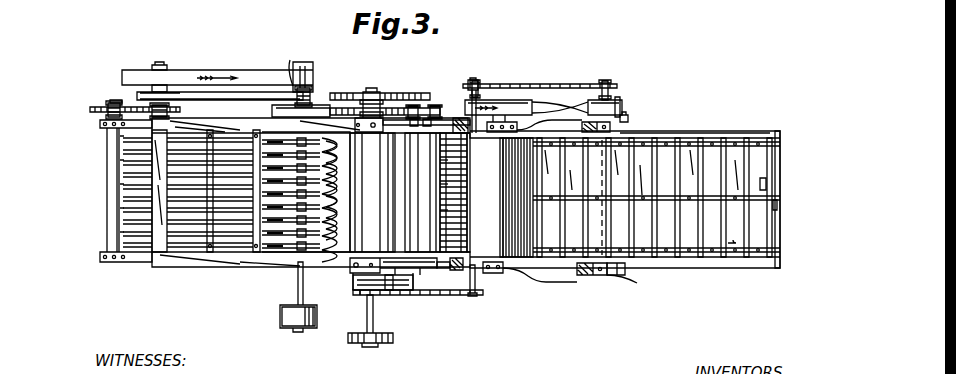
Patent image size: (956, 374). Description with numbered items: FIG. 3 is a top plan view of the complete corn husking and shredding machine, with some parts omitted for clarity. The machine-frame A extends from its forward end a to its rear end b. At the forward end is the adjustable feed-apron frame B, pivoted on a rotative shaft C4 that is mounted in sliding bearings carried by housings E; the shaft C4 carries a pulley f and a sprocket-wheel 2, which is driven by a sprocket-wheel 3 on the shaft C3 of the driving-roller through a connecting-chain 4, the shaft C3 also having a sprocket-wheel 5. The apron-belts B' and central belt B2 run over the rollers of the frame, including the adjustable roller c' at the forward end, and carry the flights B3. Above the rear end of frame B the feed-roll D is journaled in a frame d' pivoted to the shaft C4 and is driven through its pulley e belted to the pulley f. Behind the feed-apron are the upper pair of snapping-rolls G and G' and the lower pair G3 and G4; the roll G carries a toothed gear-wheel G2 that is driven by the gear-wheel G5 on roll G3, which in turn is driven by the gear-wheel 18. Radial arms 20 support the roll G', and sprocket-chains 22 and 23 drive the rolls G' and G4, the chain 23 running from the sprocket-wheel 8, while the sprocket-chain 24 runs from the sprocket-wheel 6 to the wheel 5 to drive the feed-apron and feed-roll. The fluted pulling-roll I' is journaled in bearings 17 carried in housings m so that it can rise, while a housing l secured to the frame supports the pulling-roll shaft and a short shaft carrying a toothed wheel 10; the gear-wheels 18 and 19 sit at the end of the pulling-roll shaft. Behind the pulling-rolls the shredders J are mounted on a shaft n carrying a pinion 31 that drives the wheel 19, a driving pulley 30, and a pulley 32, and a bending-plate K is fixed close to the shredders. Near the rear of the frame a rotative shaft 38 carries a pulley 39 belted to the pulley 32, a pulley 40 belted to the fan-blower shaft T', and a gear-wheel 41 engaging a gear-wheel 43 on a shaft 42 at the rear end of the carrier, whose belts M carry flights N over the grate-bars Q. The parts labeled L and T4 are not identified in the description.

The machine-frame A is at (246, 265).
The carrier belts M is at (107, 132).
The grate-bars Q is at (122, 180).
The rear end of the frame b is at (152, 264).
The flights N is at (209, 243).
The shredders J is at (266, 252).
The bearings 17 is at (350, 264).
The bending-plate K is at (386, 158).
The pulling-roll I' is at (395, 192).
The lower snapping-roll of upper pair G is at (461, 192).
The lower snapping-roll of lower pair G4 is at (440, 160).
The upper snapping-roll of lower pair G3 is at (440, 184).
The upper snapping-roll of upper pair G' is at (464, 213).
The partition L is at (501, 257).
The feed-roll D is at (513, 273).
The feed-apron frame B is at (656, 181).
The apron-belts B' is at (780, 199).
The central belt B2 is at (757, 198).
The roller c' is at (713, 197).
The flights B3 is at (733, 240).
The pulley 39 is at (195, 70).
The rotative shaft 38 is at (160, 65).
The pinion 31 is at (284, 90).
The pulley 32 is at (303, 86).
The shredder shaft n is at (290, 60).
The pulley 40 is at (114, 102).
The shaft 42 is at (110, 101).
The gear-wheel 43 is at (90, 110).
The gear-wheel 41 is at (169, 108).
The fan-blower shaft T' is at (371, 91).
The toothed gear-wheel 18 is at (359, 93).
The toothed gear-wheel 19 is at (376, 88).
The toothed gear-wheel G5 is at (410, 106).
The toothed gear-wheel G2 is at (435, 106).
The shaft C3 is at (468, 84).
The sprocket-wheel 3 is at (479, 81).
The connecting-chain 4 is at (555, 84).
The pulley e is at (528, 100).
The sprocket-wheel 2 is at (604, 81).
The rotative shaft C4 is at (620, 100).
The pulley f is at (626, 110).
The housings E is at (612, 126).
The housings m is at (352, 272).
The pulley 30 is at (280, 318).
The housing l is at (354, 290).
The sprocket-wheel 8 is at (351, 300).
The sprocket-wheel 6 is at (360, 298).
The bar T4 is at (395, 296).
The toothed wheel 10 is at (365, 342).
The sprocket-chain 23 is at (390, 288).
The radial arms 20 is at (396, 283).
The sprocket-chain 22 is at (422, 288).
The sprocket-chain 24 is at (440, 285).
The sprocket-wheel 5 is at (456, 272).
The feed-roll frame d' is at (555, 288).
The forward end of the frame a is at (617, 273).